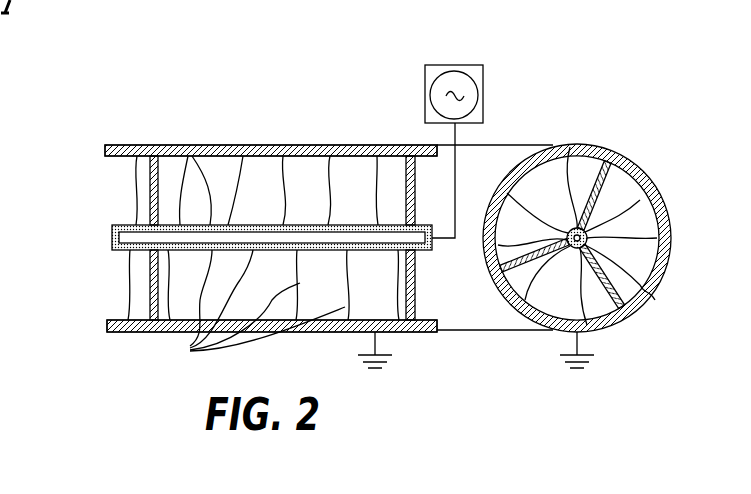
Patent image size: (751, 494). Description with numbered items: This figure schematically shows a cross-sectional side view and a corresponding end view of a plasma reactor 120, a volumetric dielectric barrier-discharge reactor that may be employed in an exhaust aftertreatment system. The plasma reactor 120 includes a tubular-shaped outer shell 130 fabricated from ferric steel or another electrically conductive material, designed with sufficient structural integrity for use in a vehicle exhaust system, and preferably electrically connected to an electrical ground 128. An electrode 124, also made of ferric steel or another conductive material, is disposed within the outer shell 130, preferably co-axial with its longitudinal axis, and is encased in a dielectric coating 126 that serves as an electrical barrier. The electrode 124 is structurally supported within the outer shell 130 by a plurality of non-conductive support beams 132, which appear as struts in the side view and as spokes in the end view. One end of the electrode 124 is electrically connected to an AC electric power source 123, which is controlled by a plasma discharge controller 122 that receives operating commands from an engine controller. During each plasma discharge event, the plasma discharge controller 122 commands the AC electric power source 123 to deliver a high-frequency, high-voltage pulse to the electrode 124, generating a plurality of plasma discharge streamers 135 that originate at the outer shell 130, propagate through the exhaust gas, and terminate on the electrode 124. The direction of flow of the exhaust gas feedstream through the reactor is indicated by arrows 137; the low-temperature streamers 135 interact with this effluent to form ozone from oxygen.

The plasma reactor 120 is at (155, 140).
The plasma discharge controller 122 is at (472, 60).
The AC electric power source 123 is at (445, 73).
The electrode 124 is at (190, 145).
The dielectric coating 126 is at (243, 145).
The electrical ground 128 is at (378, 370).
The outer shell 130 is at (315, 145).
The non-conductive support beams 132 is at (147, 308).
The plasma discharge streamers 135 is at (668, 330).
The exhaust gas feedstream flow arrows 137 is at (120, 180).